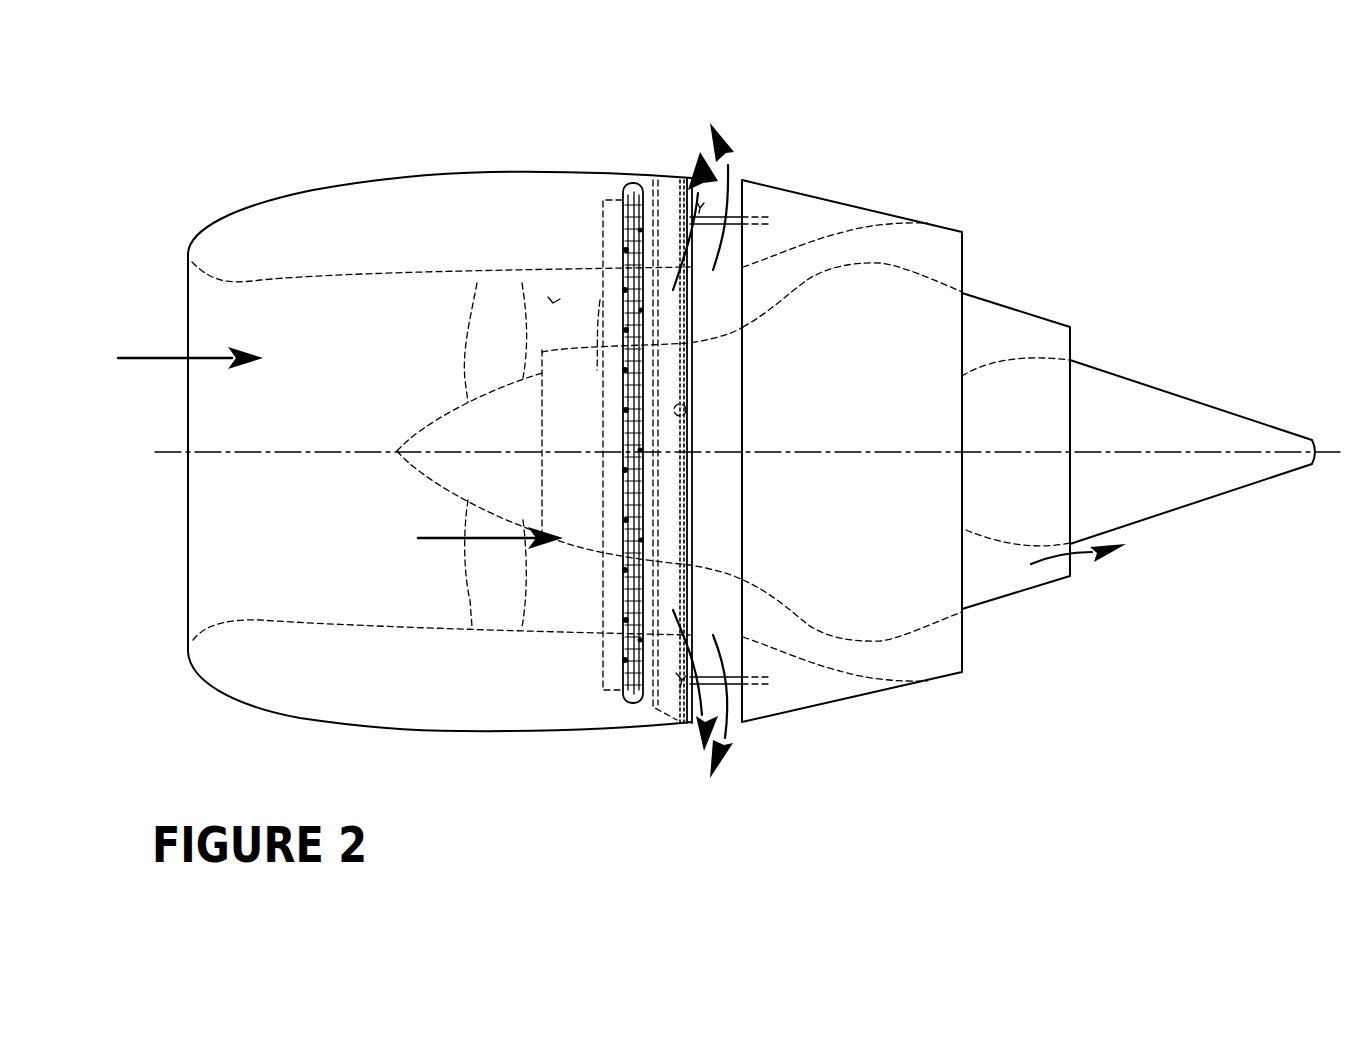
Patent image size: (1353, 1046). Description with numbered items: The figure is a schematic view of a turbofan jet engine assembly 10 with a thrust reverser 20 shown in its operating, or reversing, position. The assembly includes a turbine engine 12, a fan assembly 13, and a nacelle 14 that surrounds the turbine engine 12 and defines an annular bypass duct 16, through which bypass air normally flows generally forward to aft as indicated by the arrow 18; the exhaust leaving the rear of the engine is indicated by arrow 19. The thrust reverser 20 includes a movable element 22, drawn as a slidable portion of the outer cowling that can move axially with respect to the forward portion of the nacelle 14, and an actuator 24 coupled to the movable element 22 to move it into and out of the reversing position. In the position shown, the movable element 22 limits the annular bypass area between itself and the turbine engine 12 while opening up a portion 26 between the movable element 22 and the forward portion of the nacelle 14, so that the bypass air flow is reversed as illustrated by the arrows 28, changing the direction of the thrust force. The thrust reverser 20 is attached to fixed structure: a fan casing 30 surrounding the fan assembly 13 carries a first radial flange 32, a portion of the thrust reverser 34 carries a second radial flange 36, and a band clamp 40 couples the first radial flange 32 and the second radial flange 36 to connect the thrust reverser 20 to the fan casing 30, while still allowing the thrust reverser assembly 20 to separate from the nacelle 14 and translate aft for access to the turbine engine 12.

The turbofan jet engine assembly 10 is at (212, 184).
The turbine engine 12 is at (600, 300).
The fan assembly 13 is at (490, 272).
The nacelle 14 is at (313, 190).
The annular bypass duct 16 is at (557, 272).
The arrow 18 is at (162, 357).
The exhaust flow 19 is at (1075, 562).
The thrust reverser 20 is at (806, 126).
The movable element 22 is at (813, 188).
The actuator 24 is at (762, 215).
The portion 26 is at (697, 205).
The arrows 28 is at (717, 172).
The fan casing 30 is at (607, 653).
The first radial flange 32 is at (647, 197).
The portion of a thrust reverser 34 is at (697, 727).
The second radial flange 36 is at (625, 190).
The band clamp 40 is at (607, 587).